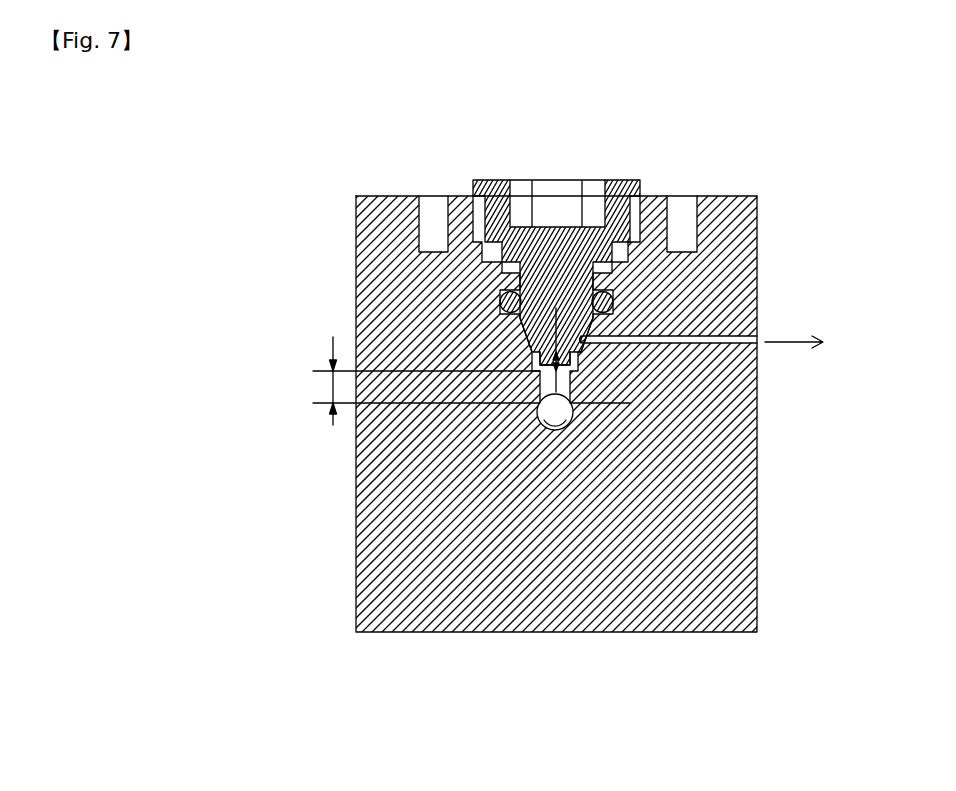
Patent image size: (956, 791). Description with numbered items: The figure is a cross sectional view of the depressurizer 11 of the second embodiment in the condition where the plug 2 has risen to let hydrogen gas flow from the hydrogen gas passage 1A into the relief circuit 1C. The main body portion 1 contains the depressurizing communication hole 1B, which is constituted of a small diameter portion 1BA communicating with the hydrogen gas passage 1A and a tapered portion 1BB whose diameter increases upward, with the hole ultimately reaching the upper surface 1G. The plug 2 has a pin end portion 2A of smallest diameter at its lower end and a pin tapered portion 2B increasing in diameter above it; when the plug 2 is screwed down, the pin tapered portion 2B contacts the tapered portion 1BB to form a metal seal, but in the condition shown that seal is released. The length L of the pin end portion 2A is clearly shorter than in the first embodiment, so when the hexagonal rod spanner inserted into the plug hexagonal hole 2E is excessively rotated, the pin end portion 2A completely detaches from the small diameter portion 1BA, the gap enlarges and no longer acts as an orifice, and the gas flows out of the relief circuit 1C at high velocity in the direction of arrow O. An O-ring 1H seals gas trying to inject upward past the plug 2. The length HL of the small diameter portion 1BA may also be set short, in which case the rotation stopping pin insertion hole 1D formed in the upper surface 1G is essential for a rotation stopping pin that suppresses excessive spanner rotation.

The depressurizer 11 is at (338, 160).
The main body portion 1 is at (355, 603).
The hydrogen gas passage 1A is at (553, 432).
The depressurizing communication hole 1B is at (483, 255).
The small diameter portion 1BA is at (573, 409).
The tapered portion 1BB is at (582, 336).
The relief circuit 1C is at (707, 343).
The rotation stopping pin insertion hole 1D is at (697, 222).
The upper surface 1G is at (740, 197).
The O-ring 1H is at (503, 297).
The plug 2 is at (633, 180).
The pin end portion 2A is at (572, 373).
The pin tapered portion 2B is at (560, 305).
The plug hexagonal hole 2E is at (523, 200).
The length of the pin end portion L is at (548, 349).
The length of the small diameter portion HL is at (464, 381).
The arrow O is at (794, 332).